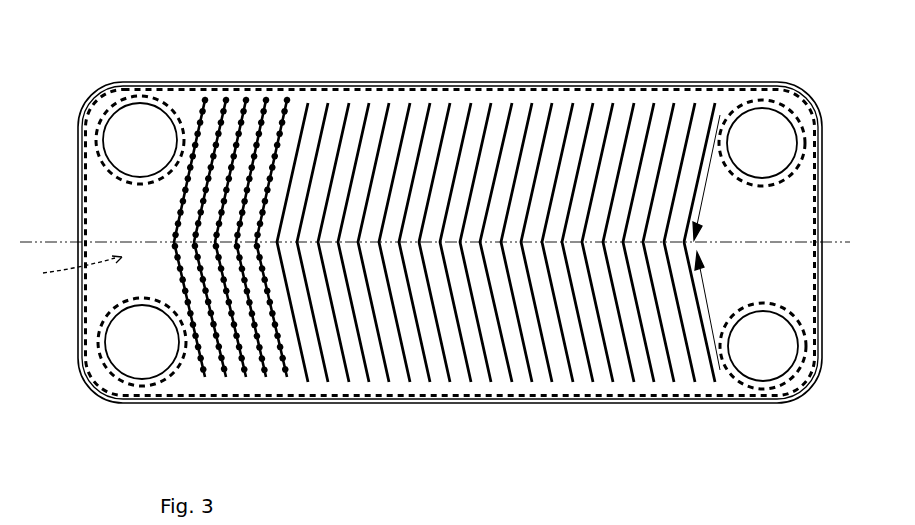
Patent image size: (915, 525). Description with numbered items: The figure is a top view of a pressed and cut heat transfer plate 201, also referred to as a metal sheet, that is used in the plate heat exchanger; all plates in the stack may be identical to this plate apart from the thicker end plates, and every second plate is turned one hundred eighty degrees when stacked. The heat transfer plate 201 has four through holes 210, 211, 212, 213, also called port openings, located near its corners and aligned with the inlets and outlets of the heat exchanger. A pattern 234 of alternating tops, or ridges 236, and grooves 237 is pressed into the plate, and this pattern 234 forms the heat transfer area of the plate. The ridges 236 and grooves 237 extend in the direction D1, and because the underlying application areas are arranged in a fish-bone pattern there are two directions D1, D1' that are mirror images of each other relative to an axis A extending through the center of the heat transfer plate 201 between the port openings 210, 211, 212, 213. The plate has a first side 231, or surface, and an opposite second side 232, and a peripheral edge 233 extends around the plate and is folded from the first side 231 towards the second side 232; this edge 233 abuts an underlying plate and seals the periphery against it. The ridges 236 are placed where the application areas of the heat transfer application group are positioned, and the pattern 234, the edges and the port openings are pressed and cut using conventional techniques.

The heat transfer plate 201 is at (577, 66).
The through hole 210 is at (122, 344).
The through hole 211 is at (763, 140).
The through hole 212 is at (773, 355).
The through hole 213 is at (132, 130).
The first side 231 is at (120, 222).
The second side 232 is at (64, 271).
The peripheral edge 233 is at (152, 86).
The pattern 234 is at (591, 210).
The ridges 236 is at (292, 136).
The grooves 237 is at (320, 117).
The direction D1 is at (794, 311).
The direction D1' is at (794, 177).
The axis A is at (852, 242).